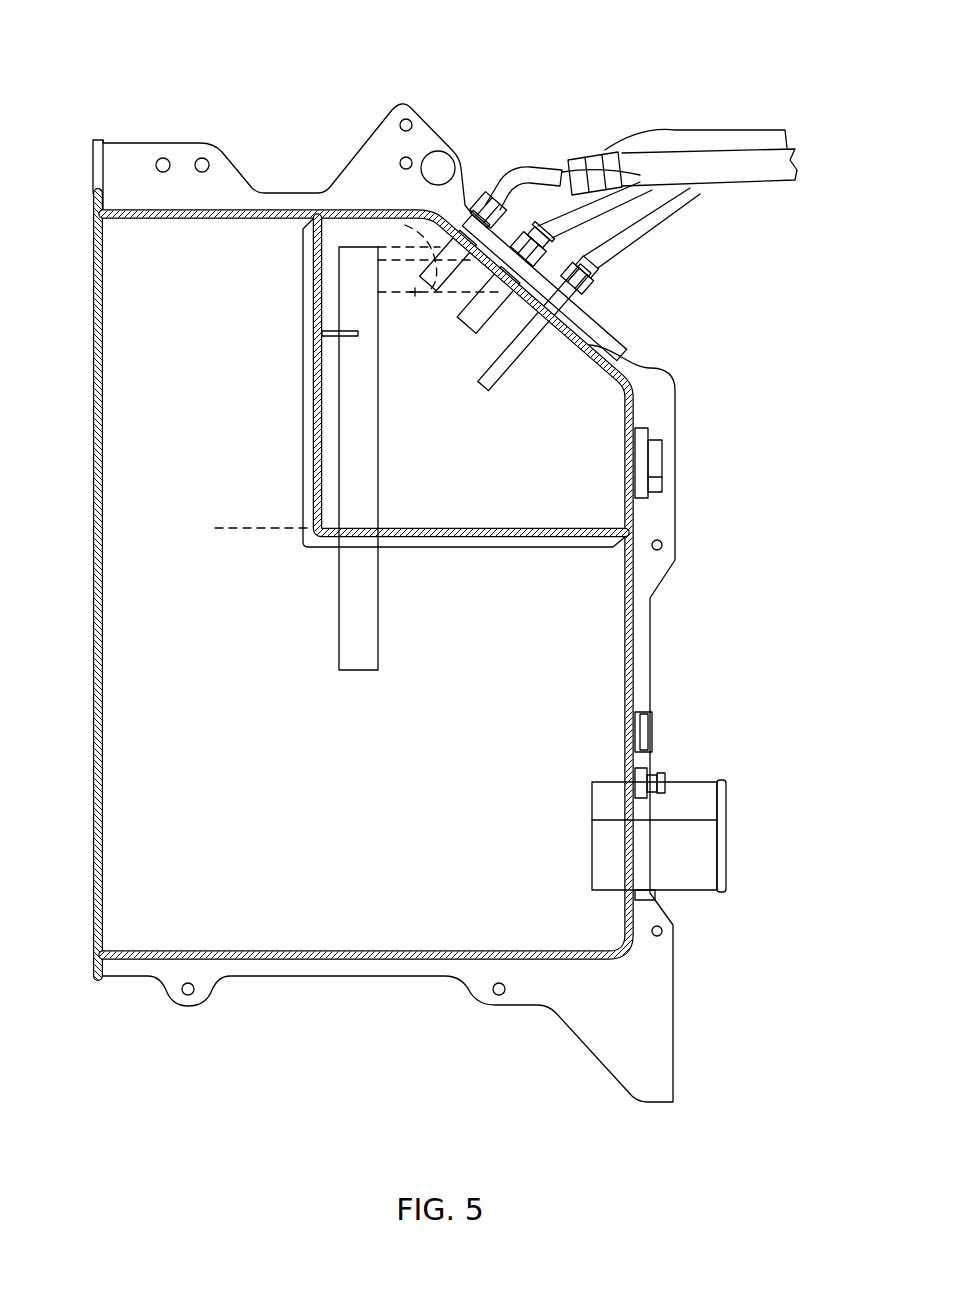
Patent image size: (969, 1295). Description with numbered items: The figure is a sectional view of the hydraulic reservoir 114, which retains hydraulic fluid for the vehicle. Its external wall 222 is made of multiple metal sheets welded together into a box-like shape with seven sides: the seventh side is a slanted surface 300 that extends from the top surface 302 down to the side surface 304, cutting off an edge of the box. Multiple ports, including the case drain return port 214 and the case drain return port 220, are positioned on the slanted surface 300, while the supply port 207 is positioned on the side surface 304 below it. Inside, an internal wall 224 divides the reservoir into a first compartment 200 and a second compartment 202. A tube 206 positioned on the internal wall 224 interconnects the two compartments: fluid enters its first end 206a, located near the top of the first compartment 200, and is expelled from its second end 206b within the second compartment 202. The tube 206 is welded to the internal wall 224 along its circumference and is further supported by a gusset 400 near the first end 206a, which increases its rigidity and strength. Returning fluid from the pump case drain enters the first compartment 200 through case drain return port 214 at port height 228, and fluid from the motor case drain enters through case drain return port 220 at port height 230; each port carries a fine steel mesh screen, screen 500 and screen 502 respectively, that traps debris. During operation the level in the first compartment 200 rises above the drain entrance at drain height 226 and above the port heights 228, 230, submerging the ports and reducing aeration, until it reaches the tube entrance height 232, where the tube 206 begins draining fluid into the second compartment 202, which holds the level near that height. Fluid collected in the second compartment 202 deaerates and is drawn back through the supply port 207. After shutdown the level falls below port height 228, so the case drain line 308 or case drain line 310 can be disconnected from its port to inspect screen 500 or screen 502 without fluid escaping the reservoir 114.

The hydraulic reservoir 114 is at (118, 58).
The first compartment 200 is at (598, 505).
The second compartment 202 is at (193, 553).
The tube 206 is at (355, 410).
The first end 206a is at (340, 232).
The second end 206b is at (350, 672).
The supply port 207 is at (670, 850).
The case drain return port 214 is at (592, 283).
The case drain return port 220 is at (487, 210).
The external wall 222 is at (93, 342).
The internal wall 224 is at (516, 540).
The drain height 226 is at (255, 528).
The port height 228 is at (415, 295).
The port height 230 is at (395, 280).
The tube entrance height 232 is at (372, 213).
The slanted surface 300 is at (592, 348).
The top surface 302 is at (230, 210).
The side surface 304 is at (660, 430).
The case drain line 308 is at (565, 225).
The case drain line 310 is at (700, 168).
The gusset 400 is at (338, 338).
The screen 500 is at (468, 330).
The screen 502 is at (430, 292).